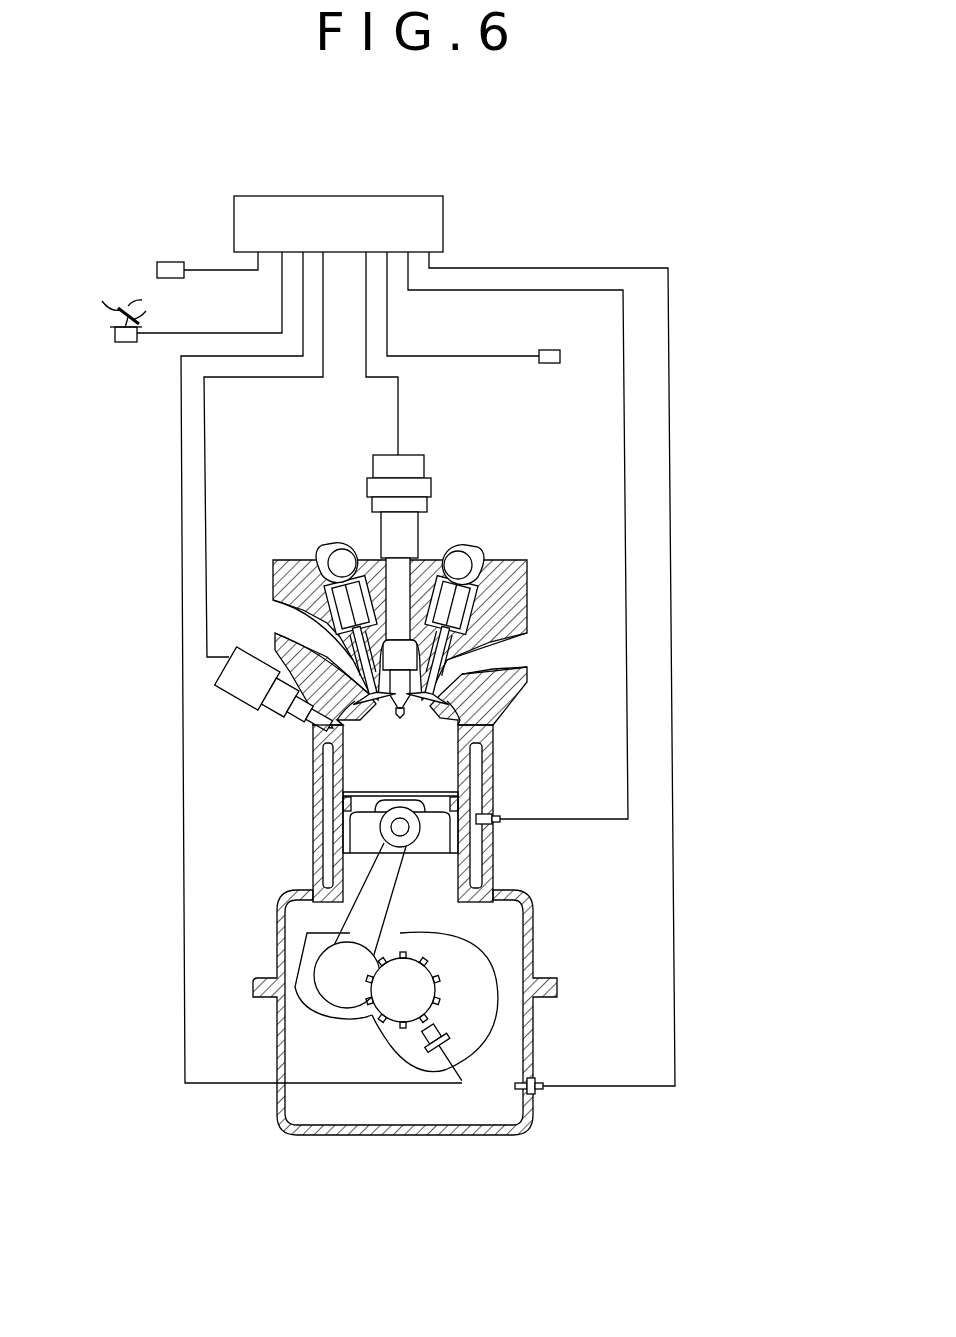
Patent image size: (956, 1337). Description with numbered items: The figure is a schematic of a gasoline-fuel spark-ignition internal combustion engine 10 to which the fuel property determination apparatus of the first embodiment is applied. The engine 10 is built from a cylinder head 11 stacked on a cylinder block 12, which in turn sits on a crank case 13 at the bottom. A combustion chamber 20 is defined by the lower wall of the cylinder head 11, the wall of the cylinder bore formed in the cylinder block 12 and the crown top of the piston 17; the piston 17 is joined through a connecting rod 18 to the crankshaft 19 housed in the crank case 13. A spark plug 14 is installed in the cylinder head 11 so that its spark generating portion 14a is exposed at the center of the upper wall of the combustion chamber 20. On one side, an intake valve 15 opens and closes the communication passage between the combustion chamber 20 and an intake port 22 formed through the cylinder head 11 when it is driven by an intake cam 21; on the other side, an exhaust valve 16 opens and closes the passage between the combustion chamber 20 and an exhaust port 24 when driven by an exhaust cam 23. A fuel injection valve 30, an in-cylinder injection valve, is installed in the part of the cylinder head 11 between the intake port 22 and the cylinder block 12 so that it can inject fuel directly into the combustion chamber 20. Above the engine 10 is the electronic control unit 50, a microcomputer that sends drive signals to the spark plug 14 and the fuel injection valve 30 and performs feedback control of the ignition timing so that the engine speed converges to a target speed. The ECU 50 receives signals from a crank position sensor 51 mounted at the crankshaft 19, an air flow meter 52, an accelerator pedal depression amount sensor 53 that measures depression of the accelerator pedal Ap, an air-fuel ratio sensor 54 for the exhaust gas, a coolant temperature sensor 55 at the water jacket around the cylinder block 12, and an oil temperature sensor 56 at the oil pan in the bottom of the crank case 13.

The internal combustion engine 10 is at (485, 478).
The cylinder head 11 is at (527, 590).
The cylinder block 12 is at (508, 871).
The crank case 13 is at (593, 958).
The spark plug 14 is at (375, 462).
The spark generating portion 14a is at (403, 716).
The intake valve 15 is at (310, 717).
The exhaust valve 16 is at (485, 705).
The piston 17 is at (343, 826).
The connecting rod 18 is at (312, 890).
The crankshaft 19 is at (355, 1030).
The combustion chamber 20 is at (408, 781).
The intake cam 21 is at (330, 548).
The intake port 22 is at (292, 622).
The exhaust cam 23 is at (478, 545).
The exhaust port 24 is at (517, 653).
The fuel injection valve 30 is at (245, 700).
The electronic control unit 50 is at (430, 196).
The crank position sensor 51 is at (440, 1030).
The air flow meter 52 is at (163, 262).
The accelerator pedal depression amount sensor 53 is at (115, 333).
The air-fuel ratio sensor 54 is at (555, 350).
The coolant temperature sensor 55 is at (495, 807).
The oil temperature sensor 56 is at (535, 1080).
The accelerator pedal Ap is at (115, 310).